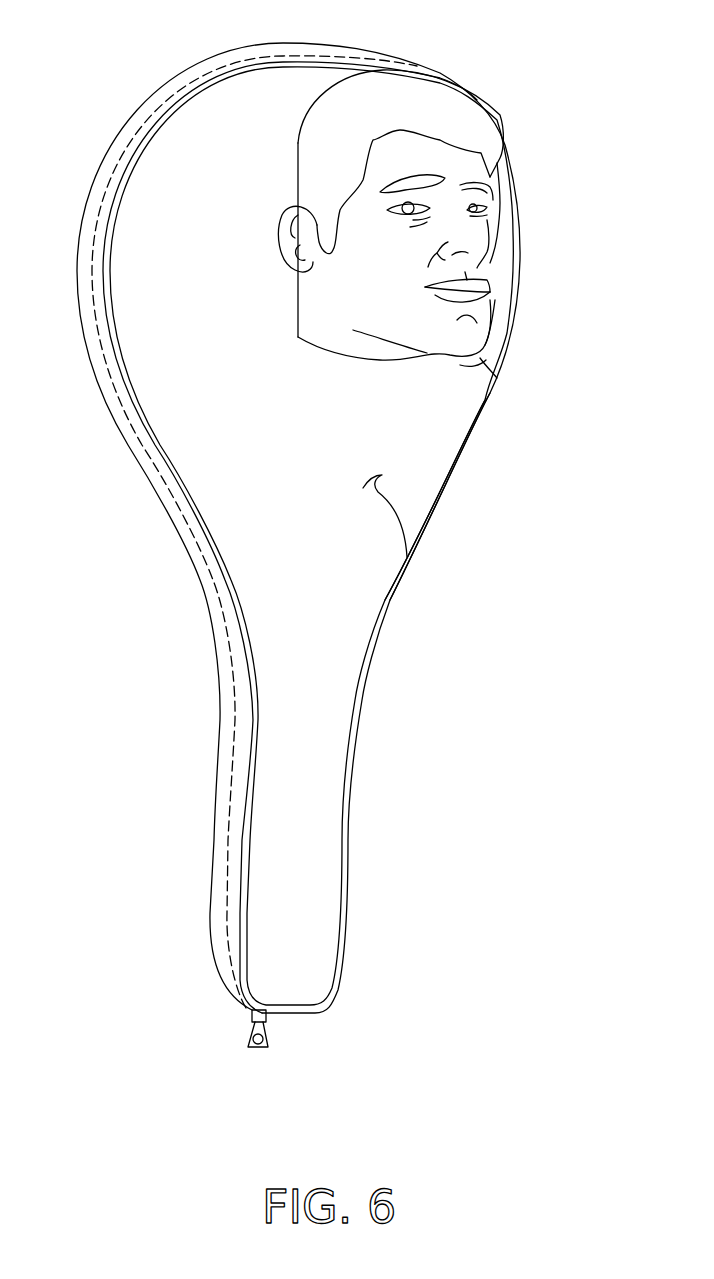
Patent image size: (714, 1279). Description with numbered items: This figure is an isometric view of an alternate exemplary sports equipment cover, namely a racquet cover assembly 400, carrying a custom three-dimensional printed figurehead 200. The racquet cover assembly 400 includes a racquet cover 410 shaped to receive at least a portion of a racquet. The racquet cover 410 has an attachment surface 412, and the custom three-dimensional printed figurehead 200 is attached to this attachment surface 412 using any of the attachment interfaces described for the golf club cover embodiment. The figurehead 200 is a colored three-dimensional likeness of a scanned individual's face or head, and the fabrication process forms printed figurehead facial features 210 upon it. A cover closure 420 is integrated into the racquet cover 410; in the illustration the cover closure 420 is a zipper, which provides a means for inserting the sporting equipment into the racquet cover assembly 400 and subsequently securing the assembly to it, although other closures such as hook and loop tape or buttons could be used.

The custom three-dimensional printed figurehead 200 is at (500, 78).
The printed figurehead facial features 210 is at (490, 393).
The racquet cover assembly 400 is at (312, 545).
The racquet cover 410 is at (467, 457).
The attachment surface 412 is at (408, 557).
The cover closure 420 is at (152, 473).